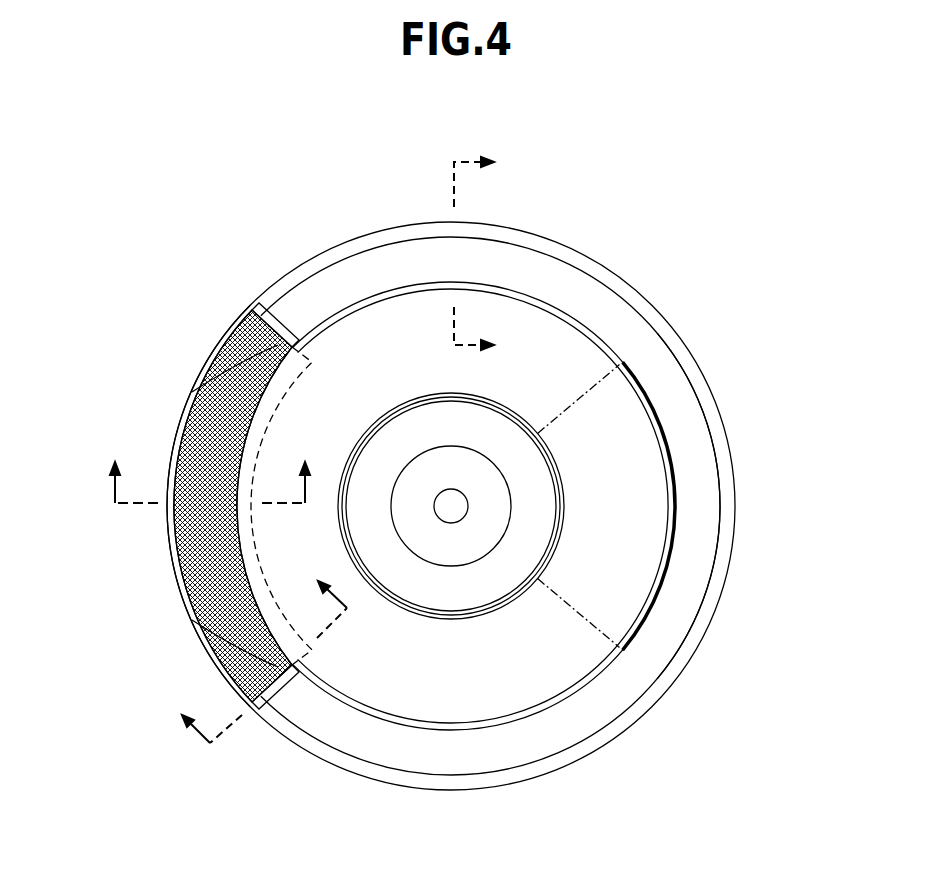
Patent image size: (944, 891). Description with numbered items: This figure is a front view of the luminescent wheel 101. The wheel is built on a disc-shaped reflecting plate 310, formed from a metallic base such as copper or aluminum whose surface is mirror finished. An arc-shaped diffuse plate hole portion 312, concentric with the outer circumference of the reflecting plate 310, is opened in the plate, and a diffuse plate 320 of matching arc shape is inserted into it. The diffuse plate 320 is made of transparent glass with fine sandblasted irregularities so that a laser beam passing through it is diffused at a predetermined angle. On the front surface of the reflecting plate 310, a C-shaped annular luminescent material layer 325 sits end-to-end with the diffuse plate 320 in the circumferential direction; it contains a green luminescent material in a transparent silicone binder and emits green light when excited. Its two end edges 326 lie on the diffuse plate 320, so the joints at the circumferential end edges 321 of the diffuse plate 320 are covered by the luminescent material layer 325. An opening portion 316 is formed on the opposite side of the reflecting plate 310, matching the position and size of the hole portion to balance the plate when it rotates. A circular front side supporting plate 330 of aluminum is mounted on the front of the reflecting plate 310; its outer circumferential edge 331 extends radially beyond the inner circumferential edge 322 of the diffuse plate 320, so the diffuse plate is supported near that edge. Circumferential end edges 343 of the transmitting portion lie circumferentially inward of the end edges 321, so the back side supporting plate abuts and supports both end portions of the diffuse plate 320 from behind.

The luminescent wheel 101 is at (649, 197).
The reflecting plate 310 is at (672, 325).
The diffuse plate hole portion 312 is at (202, 368).
The opening portion 316 is at (620, 522).
The diffuse plate 320 is at (215, 423).
The circumferential end edges 321 is at (288, 325).
The inner circumferential edge 322 is at (290, 398).
The luminescent material layer 325 is at (682, 427).
The end edges 326 is at (238, 324).
The front side supporting plate 330 is at (560, 642).
The outer circumferential edge 331 is at (232, 522).
The circumferential end edges 343 is at (222, 343).